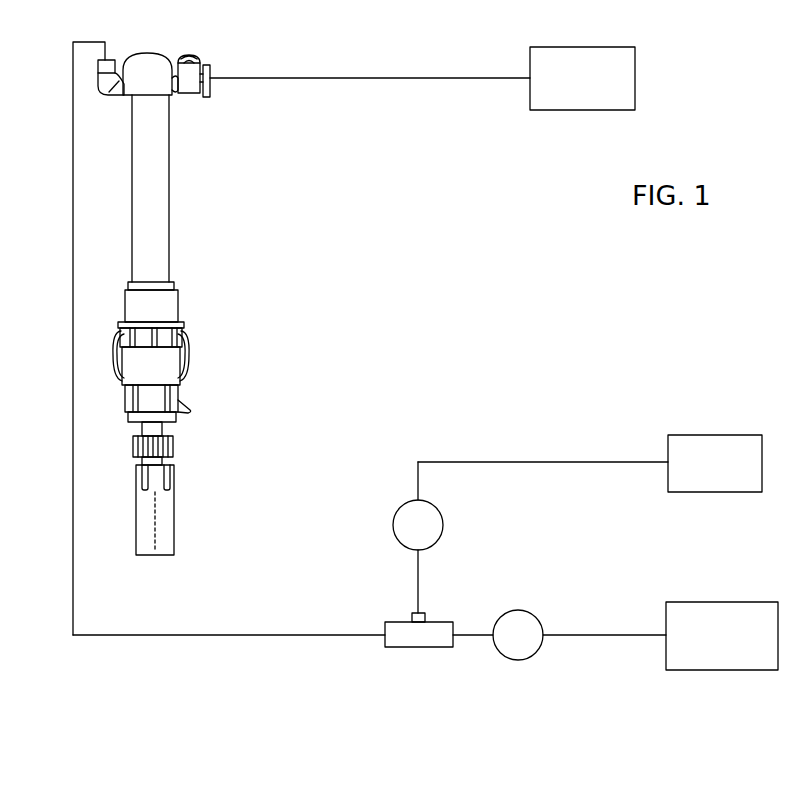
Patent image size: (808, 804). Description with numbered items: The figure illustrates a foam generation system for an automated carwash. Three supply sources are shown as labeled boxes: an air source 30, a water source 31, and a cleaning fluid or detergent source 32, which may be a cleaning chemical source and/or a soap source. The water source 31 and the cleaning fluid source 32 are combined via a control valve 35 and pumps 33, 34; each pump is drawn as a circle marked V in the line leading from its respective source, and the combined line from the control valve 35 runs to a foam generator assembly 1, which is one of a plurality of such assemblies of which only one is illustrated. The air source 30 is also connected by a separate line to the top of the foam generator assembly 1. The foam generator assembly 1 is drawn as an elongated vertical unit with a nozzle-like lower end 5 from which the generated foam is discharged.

The foam generator assembly 1 is at (176, 304).
The nozzle 5 is at (174, 518).
The air source 30 is at (635, 72).
The water source 31 is at (762, 458).
The cleaning fluid source 32 is at (778, 630).
The pump 33 is at (443, 520).
The pump 34 is at (543, 612).
The control valve 35 is at (420, 648).